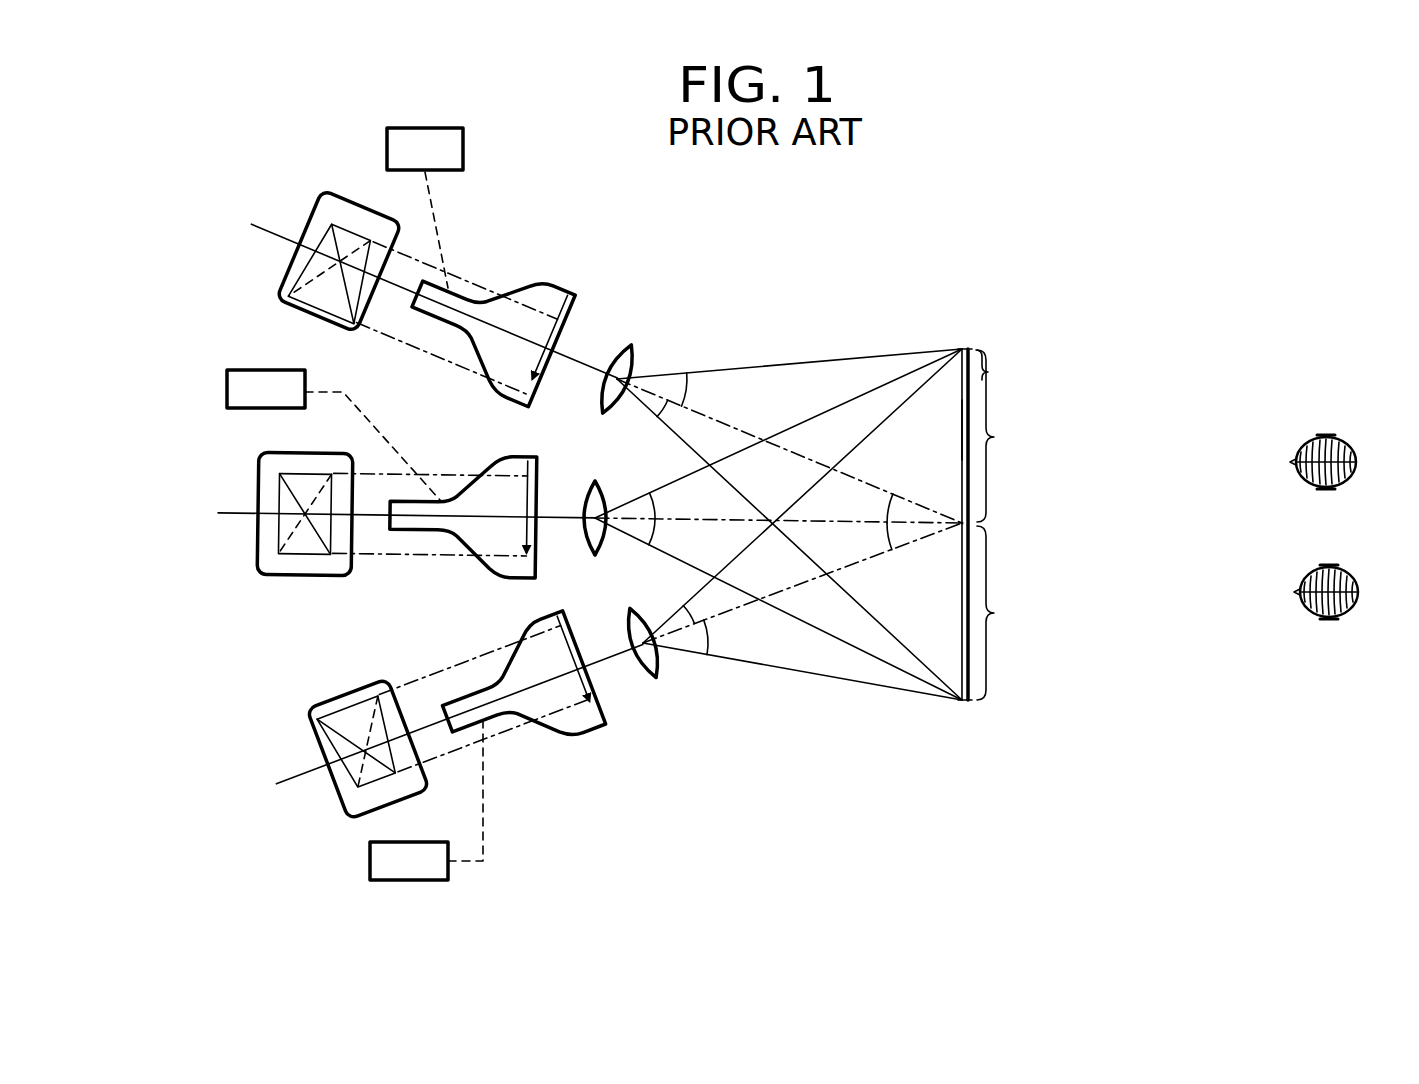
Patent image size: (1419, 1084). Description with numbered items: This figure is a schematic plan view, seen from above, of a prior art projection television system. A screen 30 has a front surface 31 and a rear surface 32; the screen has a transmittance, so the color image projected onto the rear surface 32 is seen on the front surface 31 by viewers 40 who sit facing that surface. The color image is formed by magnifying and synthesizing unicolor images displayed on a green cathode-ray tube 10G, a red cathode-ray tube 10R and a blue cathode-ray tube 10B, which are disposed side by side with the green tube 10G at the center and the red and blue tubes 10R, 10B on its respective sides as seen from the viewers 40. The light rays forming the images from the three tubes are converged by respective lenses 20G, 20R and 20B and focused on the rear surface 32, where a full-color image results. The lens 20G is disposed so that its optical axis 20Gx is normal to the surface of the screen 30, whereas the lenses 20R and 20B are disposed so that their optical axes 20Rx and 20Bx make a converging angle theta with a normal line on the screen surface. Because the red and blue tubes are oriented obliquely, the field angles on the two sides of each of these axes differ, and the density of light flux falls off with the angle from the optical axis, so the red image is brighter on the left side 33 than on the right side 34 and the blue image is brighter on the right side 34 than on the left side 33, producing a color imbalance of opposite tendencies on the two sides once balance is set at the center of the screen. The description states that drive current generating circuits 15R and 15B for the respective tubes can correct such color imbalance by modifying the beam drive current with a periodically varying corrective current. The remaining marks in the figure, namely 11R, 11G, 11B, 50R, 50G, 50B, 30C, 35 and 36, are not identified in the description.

The red cathode-ray tube 10R is at (504, 392).
The green cathode-ray tube 10G is at (484, 572).
The blue cathode-ray tube 10B is at (554, 730).
The red liquid crystal panel 11R is at (298, 258).
The green liquid crystal panel 11G is at (262, 552).
The blue liquid crystal panel 11B is at (318, 738).
The drive current generating circuit 15R is at (464, 142).
The drive current generating circuit 15B is at (227, 398).
The lens 20R is at (634, 352).
The lens 20G is at (592, 556).
The lens 20B is at (653, 680).
The optical axis 20Rx is at (813, 460).
The optical axis 20Gx is at (654, 496).
The optical axis 20Bx is at (876, 557).
The red light source unit 50R is at (282, 296).
The green light source unit 50G is at (262, 488).
The blue light source unit 50B is at (328, 714).
The screen 30 is at (988, 577).
The screen center 30C is at (972, 524).
The front surface 31 is at (988, 374).
The rear surface 32 is at (964, 430).
The left side 33 is at (1004, 613).
The right side 34 is at (1008, 436).
The screen lower end 35 is at (967, 702).
The screen upper end 36 is at (970, 350).
The viewers 40 is at (1360, 436).